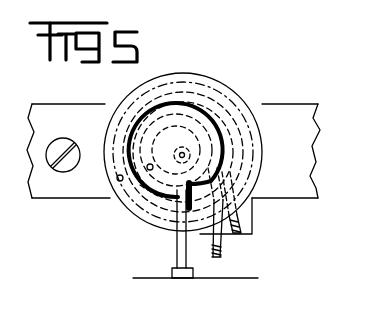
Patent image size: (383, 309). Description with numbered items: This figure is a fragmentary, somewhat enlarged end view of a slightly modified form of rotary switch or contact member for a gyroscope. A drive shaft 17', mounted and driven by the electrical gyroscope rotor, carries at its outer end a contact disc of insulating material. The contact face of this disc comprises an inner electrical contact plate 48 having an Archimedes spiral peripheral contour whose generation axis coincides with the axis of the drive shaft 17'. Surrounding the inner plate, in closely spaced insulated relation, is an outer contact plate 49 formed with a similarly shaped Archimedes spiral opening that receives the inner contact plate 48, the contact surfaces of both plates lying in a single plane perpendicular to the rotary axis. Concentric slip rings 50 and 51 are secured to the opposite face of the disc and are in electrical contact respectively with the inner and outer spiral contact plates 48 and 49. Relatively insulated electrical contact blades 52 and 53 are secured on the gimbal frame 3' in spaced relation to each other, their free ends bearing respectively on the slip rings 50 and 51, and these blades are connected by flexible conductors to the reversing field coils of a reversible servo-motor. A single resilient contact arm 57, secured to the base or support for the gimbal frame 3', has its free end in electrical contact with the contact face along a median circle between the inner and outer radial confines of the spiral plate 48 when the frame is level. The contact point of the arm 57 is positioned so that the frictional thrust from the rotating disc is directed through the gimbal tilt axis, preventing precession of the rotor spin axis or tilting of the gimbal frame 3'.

The gimbal frame 3' is at (173, 167).
The drive shaft 17' is at (173, 146).
The inner electrical contact plate 48 is at (212, 138).
The outer contact plate 49 is at (217, 107).
The slip ring 50 is at (129, 214).
The slip ring 51 is at (259, 138).
The electrical contact blade 52 is at (252, 230).
The electrical contact blade 53 is at (222, 251).
The resilient contact arm 57 is at (176, 247).